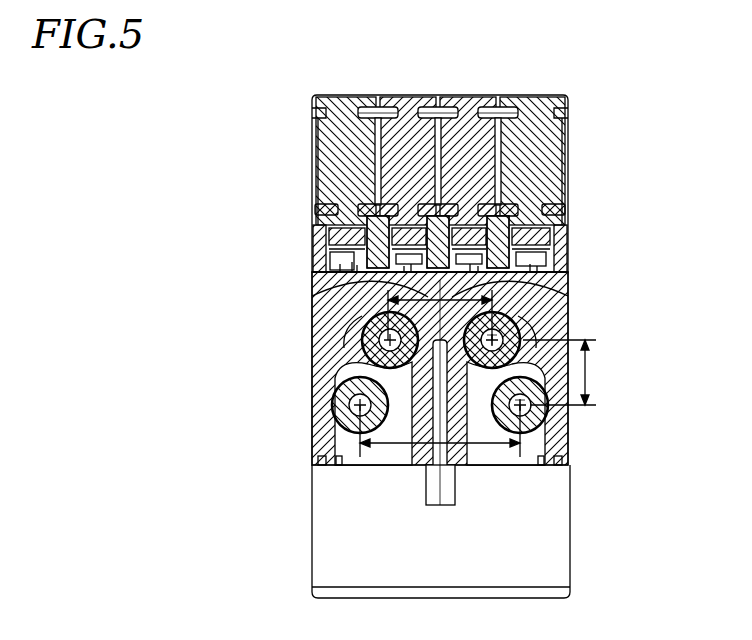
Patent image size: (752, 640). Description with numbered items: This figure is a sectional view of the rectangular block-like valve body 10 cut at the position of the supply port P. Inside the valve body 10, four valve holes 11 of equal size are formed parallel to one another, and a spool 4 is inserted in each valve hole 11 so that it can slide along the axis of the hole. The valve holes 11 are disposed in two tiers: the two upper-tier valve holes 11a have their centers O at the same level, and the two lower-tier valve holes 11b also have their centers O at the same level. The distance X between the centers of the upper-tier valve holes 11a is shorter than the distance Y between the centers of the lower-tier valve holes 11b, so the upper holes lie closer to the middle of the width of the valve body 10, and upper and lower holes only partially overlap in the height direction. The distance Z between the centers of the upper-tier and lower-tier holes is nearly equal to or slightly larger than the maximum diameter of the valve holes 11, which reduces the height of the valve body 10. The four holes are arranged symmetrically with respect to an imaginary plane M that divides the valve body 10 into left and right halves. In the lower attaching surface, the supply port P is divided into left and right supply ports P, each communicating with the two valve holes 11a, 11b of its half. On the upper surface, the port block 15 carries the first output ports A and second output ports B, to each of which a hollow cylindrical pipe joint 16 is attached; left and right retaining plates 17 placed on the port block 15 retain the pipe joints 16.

The spool 4 is at (362, 360).
The valve body 10 is at (553, 284).
The valve holes 11 is at (445, 384).
The upper-tier valve holes 11a is at (376, 324).
The lower-tier valve holes 11b is at (336, 403).
The port block 15 is at (311, 247).
The pipe joint 16 is at (465, 97).
The retaining plates 17 is at (552, 208).
The first output port A is at (333, 200).
The second output port B is at (405, 230).
The center of valve hole O is at (518, 334).
The distance between upper-tier valve hole centers X is at (388, 299).
The distance between lower-tier valve hole centers Y is at (398, 445).
The distance between upper and lower tier centers Z is at (567, 372).
The supply port P is at (342, 460).
The imaginary plane M is at (440, 505).